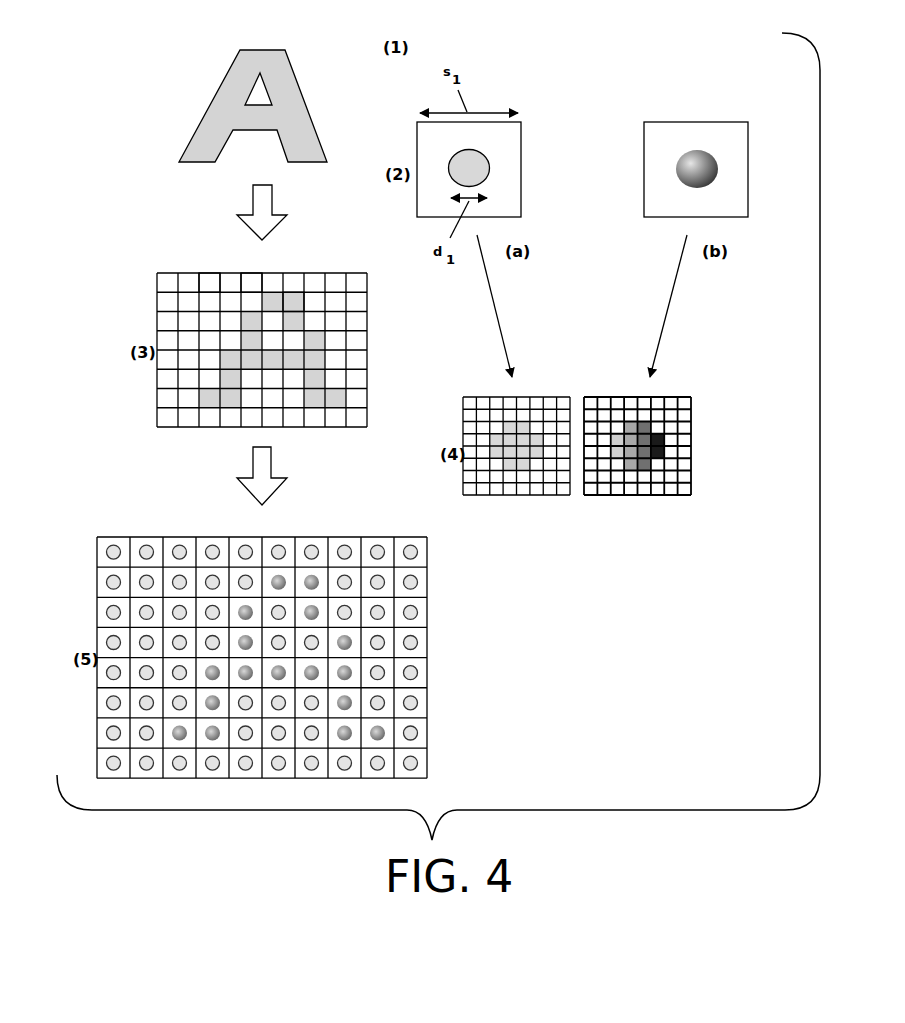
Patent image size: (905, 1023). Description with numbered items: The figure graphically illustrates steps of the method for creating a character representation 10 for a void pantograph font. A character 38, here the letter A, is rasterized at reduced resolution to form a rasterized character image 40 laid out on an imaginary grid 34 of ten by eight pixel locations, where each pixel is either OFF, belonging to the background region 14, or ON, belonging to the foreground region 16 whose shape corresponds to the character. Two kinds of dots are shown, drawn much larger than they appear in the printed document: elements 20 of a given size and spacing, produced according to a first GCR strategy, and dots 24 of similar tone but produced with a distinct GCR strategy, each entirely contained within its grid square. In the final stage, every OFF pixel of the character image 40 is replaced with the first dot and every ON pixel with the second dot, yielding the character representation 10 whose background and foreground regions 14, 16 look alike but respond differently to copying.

The character 38 is at (205, 118).
The rasterized character image 40 is at (137, 285).
The grid 34 is at (215, 287).
The background region 14 is at (252, 283).
The foreground region 16 is at (292, 302).
The character representation 10 is at (108, 583).
The elements 20 is at (450, 163).
The dots 24 is at (690, 152).